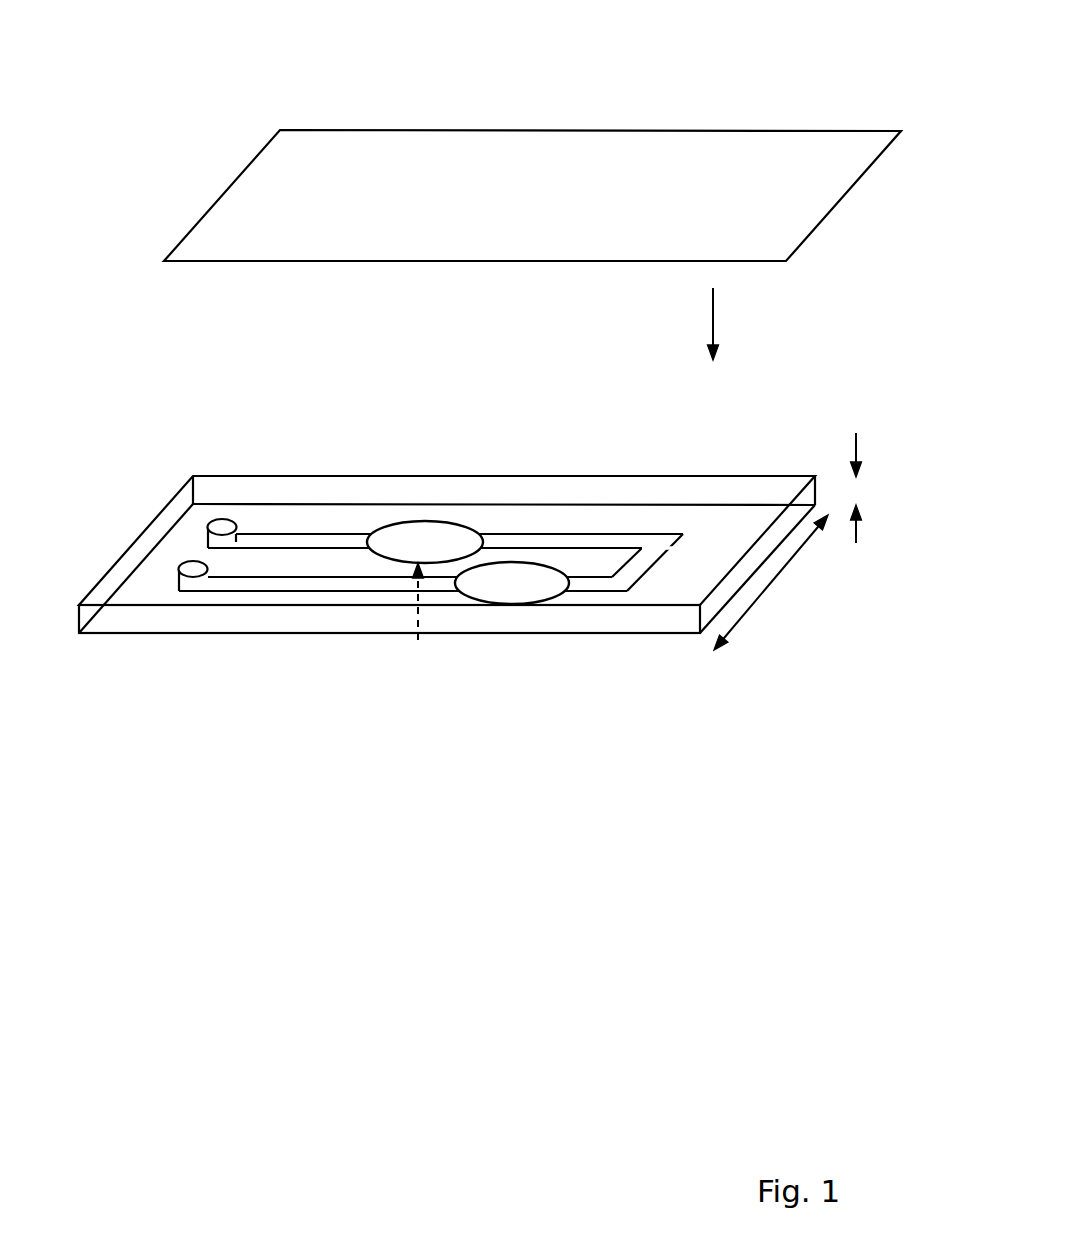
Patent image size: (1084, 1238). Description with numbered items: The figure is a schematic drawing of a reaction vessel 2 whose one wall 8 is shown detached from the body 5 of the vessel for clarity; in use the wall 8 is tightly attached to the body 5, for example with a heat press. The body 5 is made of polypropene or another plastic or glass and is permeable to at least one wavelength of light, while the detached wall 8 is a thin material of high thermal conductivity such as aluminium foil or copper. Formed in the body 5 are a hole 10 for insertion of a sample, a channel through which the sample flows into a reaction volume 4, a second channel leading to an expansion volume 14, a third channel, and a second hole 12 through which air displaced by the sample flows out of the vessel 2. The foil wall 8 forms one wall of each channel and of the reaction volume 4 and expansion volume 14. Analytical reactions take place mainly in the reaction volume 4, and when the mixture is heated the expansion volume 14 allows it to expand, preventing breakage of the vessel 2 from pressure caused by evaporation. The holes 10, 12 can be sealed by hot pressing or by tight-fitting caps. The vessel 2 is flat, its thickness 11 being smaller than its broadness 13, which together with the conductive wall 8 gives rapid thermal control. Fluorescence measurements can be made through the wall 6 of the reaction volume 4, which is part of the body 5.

The reaction vessel 2 is at (334, 903).
The reaction volume 4 is at (444, 542).
The body 5 is at (119, 416).
The wall of the reaction volume 6 is at (419, 625).
The wall 8 is at (215, 109).
The hole 10 is at (222, 527).
The thickness 11 is at (862, 487).
The second hole 12 is at (193, 570).
The broadness 13 is at (788, 600).
The expansion volume 14 is at (516, 586).